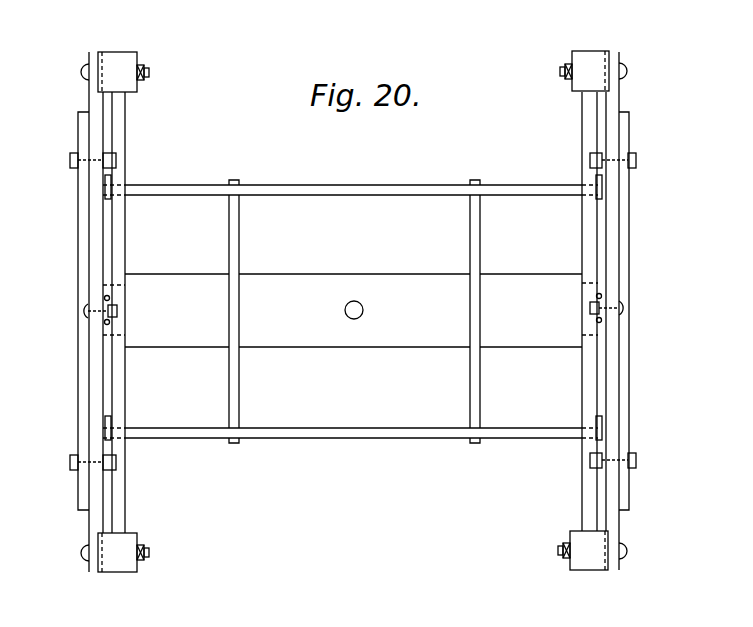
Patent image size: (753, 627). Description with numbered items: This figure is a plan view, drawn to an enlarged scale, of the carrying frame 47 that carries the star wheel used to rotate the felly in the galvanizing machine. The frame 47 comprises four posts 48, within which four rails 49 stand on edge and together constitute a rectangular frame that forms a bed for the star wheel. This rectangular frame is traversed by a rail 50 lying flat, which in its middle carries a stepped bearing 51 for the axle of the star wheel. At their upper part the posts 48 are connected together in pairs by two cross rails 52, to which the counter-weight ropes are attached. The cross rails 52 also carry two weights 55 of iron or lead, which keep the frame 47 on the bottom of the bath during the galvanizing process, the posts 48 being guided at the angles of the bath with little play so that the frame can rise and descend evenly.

The frame 47 is at (535, 418).
The posts 48 is at (132, 60).
The rails 49 is at (372, 186).
The rail 50 is at (443, 340).
The stepped bearing 51 is at (351, 319).
The cross rails 52 is at (97, 370).
The weights 55 is at (82, 426).